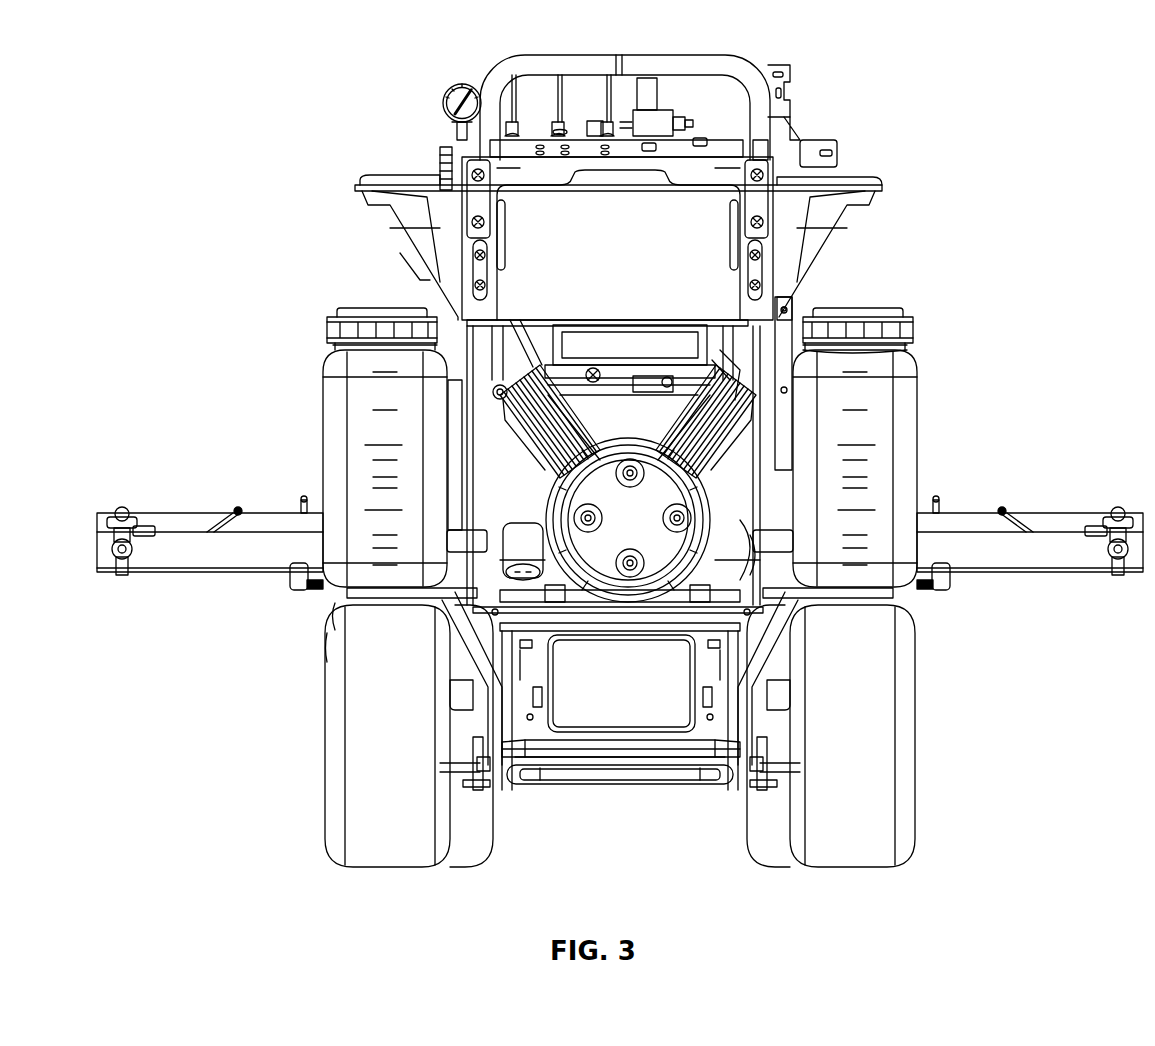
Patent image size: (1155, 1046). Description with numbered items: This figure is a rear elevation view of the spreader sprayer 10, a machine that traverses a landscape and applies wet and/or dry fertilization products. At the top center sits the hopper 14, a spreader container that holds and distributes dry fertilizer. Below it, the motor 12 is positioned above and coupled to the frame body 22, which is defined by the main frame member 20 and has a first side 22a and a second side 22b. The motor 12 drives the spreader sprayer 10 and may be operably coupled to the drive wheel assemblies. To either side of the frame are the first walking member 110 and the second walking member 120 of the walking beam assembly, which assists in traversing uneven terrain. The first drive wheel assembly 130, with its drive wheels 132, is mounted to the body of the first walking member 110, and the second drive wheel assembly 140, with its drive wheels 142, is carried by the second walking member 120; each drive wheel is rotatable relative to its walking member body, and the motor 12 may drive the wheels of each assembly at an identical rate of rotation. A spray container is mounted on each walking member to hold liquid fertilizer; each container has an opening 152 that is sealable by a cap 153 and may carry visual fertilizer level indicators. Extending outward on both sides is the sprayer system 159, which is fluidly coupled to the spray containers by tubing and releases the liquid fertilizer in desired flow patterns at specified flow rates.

The spreader sprayer 10 is at (233, 77).
The motor 12 is at (717, 473).
The hopper 14 is at (848, 207).
The main frame member 20 is at (590, 785).
The frame body 22 is at (527, 790).
The first side 22a is at (505, 805).
The second side 22b is at (729, 803).
The first walking member 110 is at (387, 605).
The second walking member 120 is at (875, 602).
The first drive wheel assembly 130 is at (297, 886).
The drive wheels 132 is at (365, 748).
The second drive wheel assembly 140 is at (880, 900).
The drive wheels 142 is at (902, 778).
The opening 152 is at (918, 344).
The cap 153 is at (903, 317).
The sprayer system 159 is at (1068, 513).